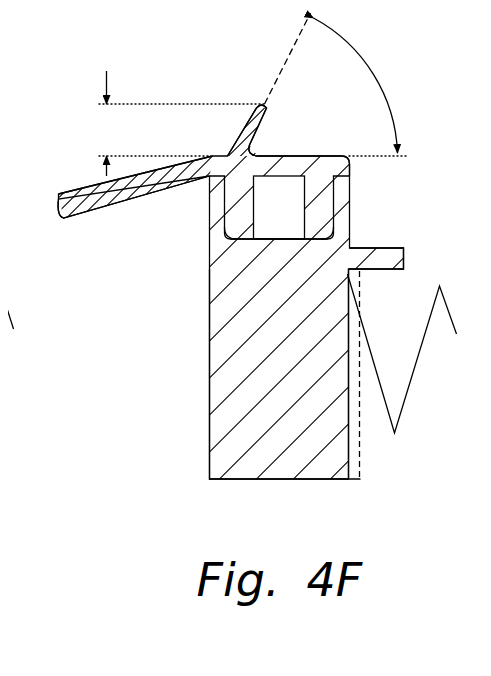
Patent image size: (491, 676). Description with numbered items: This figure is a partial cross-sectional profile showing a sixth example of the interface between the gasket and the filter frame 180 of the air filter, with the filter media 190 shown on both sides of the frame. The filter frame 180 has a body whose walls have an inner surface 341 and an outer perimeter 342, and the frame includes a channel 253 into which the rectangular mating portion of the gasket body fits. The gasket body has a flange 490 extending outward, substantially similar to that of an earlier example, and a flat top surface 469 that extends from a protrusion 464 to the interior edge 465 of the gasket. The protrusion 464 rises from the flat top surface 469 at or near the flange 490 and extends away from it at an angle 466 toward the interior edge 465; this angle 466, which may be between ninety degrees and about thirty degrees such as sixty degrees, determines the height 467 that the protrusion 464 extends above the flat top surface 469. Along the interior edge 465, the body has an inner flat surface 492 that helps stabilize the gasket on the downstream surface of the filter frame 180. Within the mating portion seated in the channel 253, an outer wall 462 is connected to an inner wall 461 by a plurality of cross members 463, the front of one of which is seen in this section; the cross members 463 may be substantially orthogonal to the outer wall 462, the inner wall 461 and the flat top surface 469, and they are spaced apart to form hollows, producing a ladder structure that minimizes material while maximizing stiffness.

The filter frame 180 is at (205, 402).
The filter media 190 is at (408, 390).
The channel 253 is at (240, 240).
The inner surface 341 is at (347, 450).
The outer perimeter 342 is at (208, 357).
The inner wall 461 is at (332, 212).
The outer wall 462 is at (317, 241).
The cross members 463 is at (270, 211).
The protrusion 464 is at (241, 126).
The interior edge 465 is at (350, 164).
The angle 466 is at (368, 62).
The height 467 is at (104, 130).
The flat top surface 469 is at (307, 152).
The flange 490 is at (80, 192).
The inner flat surface 492 is at (333, 177).